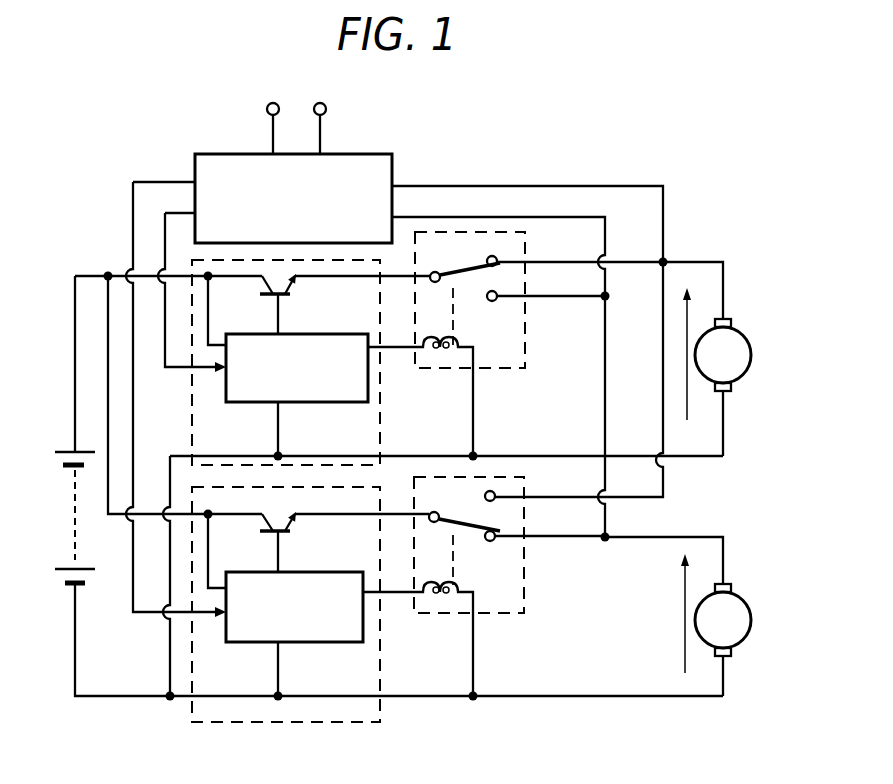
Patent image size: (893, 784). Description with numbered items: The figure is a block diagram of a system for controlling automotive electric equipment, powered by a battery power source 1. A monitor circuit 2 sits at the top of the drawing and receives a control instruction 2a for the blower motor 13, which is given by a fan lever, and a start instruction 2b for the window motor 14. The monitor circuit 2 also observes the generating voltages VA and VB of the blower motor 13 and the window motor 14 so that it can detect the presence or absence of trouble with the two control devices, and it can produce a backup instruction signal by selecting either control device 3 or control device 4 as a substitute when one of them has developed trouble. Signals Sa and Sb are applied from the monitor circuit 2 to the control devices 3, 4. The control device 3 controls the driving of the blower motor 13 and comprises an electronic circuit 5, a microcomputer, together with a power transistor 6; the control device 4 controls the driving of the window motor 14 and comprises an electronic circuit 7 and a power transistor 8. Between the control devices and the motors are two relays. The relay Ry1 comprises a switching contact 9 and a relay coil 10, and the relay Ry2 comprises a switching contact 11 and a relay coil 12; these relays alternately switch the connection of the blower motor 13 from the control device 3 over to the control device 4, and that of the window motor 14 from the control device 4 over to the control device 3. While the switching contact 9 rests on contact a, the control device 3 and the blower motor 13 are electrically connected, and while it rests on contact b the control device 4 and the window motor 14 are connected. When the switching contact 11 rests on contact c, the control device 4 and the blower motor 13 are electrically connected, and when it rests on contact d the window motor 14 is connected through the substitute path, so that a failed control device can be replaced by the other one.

The battery power source 1 is at (68, 491).
The monitor circuit 2 is at (397, 175).
The control instruction 2a is at (319, 115).
The start instruction 2b is at (273, 115).
The control device 3 is at (380, 405).
The control device 4 is at (380, 648).
The electronic circuit 5 is at (295, 402).
The power transistor 6 is at (290, 297).
The electronic circuit 7 is at (305, 642).
The power transistor 8 is at (290, 535).
The switching contact 9 is at (478, 268).
The relay coil 10 is at (440, 352).
The switching contact 11 is at (503, 514).
The relay coil 12 is at (440, 598).
The blower motor 13 is at (752, 348).
The power window motor 14 is at (752, 600).
The contact a is at (492, 256).
The contact b is at (495, 292).
The contact c is at (488, 491).
The contact d is at (495, 540).
The relay Ry1 is at (525, 355).
The relay Ry2 is at (524, 595).
The signal Sa is at (172, 201).
The signal Sb is at (158, 170).
The generating voltage VA is at (701, 350).
The generating voltage VB is at (698, 613).